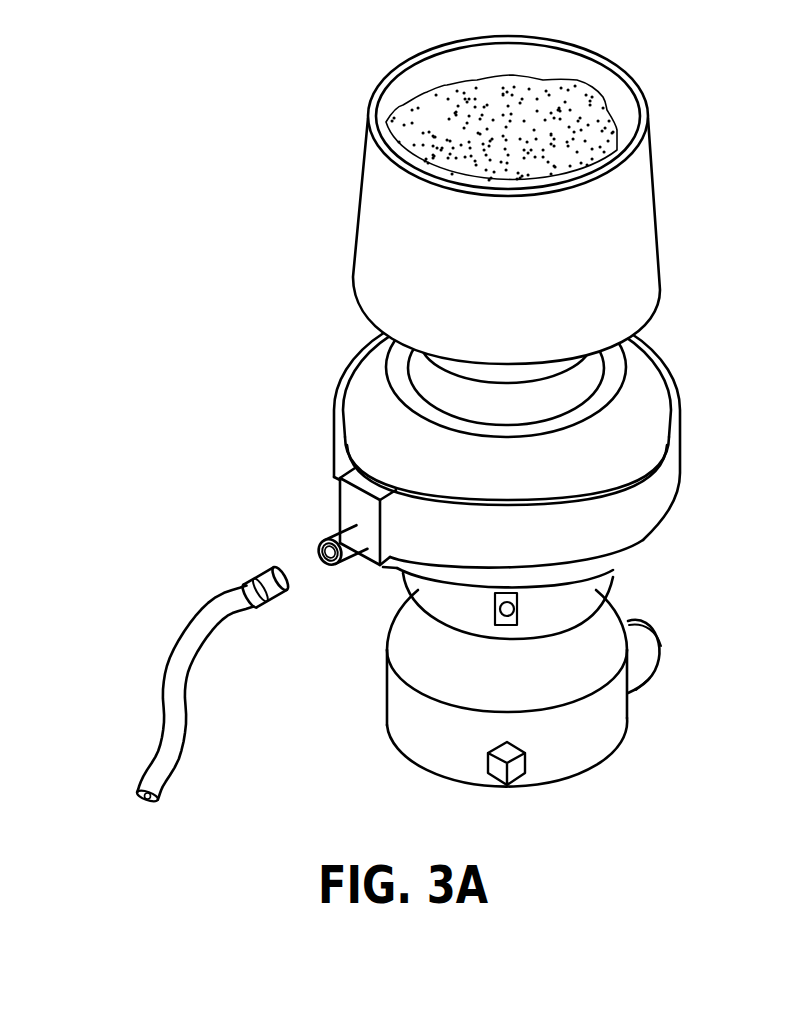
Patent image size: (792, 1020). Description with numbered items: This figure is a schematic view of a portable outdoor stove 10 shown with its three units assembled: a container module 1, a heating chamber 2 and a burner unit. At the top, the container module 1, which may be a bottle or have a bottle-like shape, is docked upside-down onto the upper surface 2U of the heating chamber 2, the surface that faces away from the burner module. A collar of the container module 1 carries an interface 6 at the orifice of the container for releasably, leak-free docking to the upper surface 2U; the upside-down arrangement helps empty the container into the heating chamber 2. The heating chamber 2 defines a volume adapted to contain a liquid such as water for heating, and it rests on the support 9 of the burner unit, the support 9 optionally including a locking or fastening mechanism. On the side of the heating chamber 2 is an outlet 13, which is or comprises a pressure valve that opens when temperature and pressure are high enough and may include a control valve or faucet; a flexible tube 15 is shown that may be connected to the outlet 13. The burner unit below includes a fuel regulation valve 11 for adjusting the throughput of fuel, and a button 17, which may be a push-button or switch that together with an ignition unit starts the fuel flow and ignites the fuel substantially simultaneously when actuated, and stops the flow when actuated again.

The portable outdoor stove 10 is at (337, 48).
The container module 1 is at (368, 190).
The heating chamber 2 is at (333, 435).
The upper surface 2U is at (400, 373).
The interface 6 is at (597, 363).
The support 9 is at (603, 578).
The fuel regulation valve 11 is at (652, 673).
The outlet 13 is at (318, 546).
The tube 15 is at (183, 713).
The button 17 is at (517, 773).